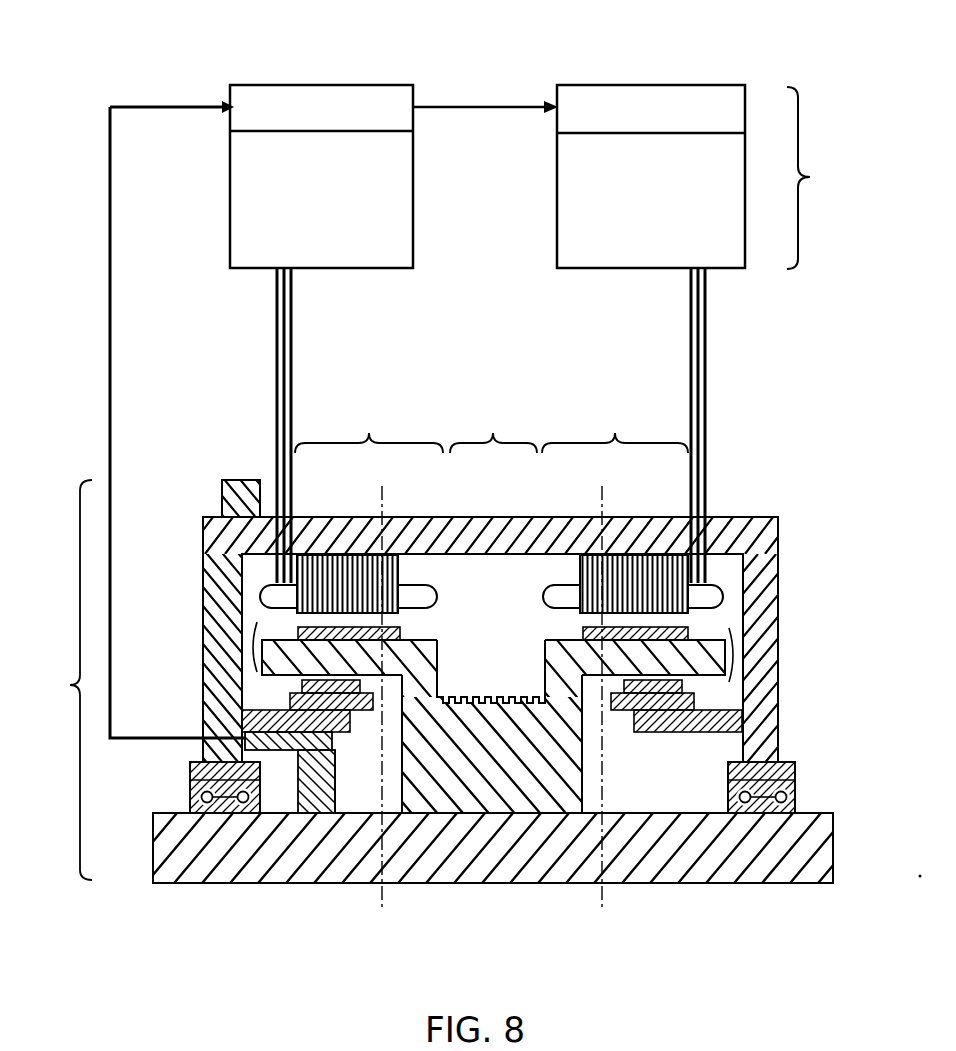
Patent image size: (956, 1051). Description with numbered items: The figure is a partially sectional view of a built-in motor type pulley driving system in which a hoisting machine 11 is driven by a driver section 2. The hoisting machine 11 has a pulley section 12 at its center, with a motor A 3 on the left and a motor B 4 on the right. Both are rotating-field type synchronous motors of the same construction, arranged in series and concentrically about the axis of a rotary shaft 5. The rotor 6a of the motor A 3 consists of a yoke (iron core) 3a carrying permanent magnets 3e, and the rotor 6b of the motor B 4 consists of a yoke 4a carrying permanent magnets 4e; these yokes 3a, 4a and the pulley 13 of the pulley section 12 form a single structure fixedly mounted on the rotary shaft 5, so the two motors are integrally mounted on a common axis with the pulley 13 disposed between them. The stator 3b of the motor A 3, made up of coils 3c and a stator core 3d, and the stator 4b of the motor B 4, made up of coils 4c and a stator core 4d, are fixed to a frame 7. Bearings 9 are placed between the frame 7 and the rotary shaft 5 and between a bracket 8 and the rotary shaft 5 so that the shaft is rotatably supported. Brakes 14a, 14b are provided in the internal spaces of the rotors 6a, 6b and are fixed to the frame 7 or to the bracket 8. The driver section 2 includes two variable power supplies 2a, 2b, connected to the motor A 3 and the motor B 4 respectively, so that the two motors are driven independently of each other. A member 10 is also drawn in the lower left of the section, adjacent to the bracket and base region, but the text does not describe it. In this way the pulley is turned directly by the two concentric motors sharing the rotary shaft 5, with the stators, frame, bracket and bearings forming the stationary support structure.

The driver section 2 is at (812, 178).
The variable power supply 2a is at (342, 85).
The variable power supply 2b is at (683, 85).
The motor A 3 is at (369, 413).
The yoke (iron core) 3a is at (380, 680).
The stator 3b is at (337, 567).
The coils 3c is at (417, 585).
The stator core 3d is at (383, 570).
The permanent magnets 3e is at (400, 634).
The motor B 4 is at (615, 413).
The yoke (iron core) 4a is at (590, 680).
The stator 4b is at (660, 570).
The coils 4c is at (562, 583).
The stator core 4d is at (632, 577).
The permanent magnets 4e is at (583, 634).
The rotary shaft 5 is at (778, 860).
The rotor 6a is at (262, 652).
The rotor 6b is at (733, 652).
The frame 7 is at (745, 517).
The bracket 8 is at (203, 540).
The bearings 9 is at (192, 790).
The support member 10 is at (305, 813).
The hoisting machine 11 is at (141, 490).
The pulley section 12 is at (489, 605).
The pulley 13 is at (495, 697).
The brake 14a is at (292, 700).
The brake 14b is at (697, 700).